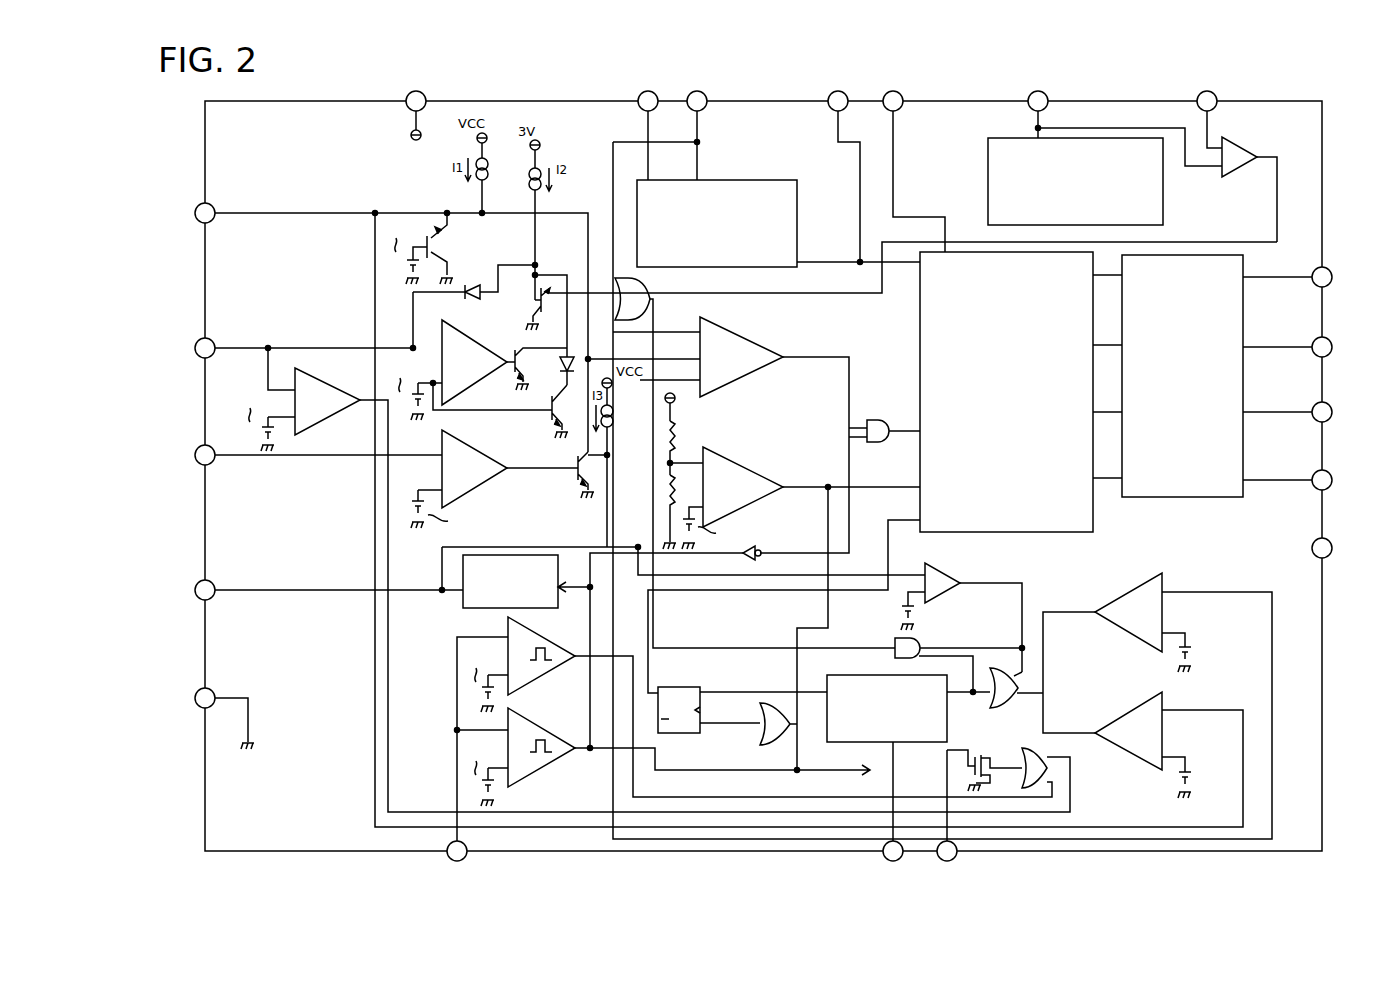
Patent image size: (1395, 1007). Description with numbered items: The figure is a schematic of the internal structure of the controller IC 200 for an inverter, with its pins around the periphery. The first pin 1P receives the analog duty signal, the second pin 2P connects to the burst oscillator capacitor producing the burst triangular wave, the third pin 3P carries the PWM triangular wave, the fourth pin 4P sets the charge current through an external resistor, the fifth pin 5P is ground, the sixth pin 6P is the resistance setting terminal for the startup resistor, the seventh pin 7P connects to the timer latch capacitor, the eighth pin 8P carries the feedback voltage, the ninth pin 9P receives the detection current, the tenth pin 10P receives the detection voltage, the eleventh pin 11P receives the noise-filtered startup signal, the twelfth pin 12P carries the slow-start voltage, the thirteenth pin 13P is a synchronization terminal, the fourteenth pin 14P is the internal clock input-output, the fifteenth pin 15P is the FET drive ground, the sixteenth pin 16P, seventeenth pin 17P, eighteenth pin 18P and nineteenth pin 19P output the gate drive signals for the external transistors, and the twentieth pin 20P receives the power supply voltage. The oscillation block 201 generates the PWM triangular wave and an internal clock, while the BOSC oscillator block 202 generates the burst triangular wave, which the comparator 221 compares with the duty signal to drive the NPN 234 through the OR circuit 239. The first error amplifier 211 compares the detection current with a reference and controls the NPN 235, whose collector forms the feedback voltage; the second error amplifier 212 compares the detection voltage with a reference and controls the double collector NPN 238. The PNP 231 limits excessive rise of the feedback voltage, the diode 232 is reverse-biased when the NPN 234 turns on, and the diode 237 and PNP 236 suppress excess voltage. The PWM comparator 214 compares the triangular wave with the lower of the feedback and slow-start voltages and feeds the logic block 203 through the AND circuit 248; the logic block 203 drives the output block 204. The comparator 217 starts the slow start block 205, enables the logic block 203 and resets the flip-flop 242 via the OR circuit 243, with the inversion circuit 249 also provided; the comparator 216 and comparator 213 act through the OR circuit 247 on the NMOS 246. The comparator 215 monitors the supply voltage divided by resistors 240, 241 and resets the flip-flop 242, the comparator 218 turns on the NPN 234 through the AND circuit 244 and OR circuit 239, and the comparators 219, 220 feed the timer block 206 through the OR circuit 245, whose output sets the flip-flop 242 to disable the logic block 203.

The controller IC 200 is at (288, 101).
The oscillation block 201 is at (738, 178).
The BOSC oscillator block 202 is at (1163, 203).
The logic block 203 is at (1040, 536).
The output block 204 is at (1184, 498).
The slow start block 205 is at (463, 608).
The timer block 206 is at (867, 747).
The first error amplifier 211 is at (458, 330).
The second error amplifier 212 is at (460, 443).
The comparator 213 is at (328, 378).
The PWM comparator 214 is at (744, 330).
The comparator 215 is at (747, 462).
The comparator 216 is at (560, 680).
The comparator 217 is at (562, 772).
The comparator 218 is at (950, 572).
The comparator 219 is at (1130, 581).
The comparator 220 is at (1118, 709).
The comparator 221 is at (1246, 166).
The PNP transistor 231 is at (428, 248).
The diode 232 is at (474, 282).
The NPN transistor 234 is at (580, 311).
The NPN transistor 235 is at (527, 370).
The PNP transistor 236 is at (546, 413).
The diode 237 is at (590, 360).
The double collector type NPN transistor 238 is at (558, 475).
The OR circuit 239 is at (651, 302).
The resistor 240 is at (686, 432).
The resistor 241 is at (685, 505).
The flip-flop circuit 242 is at (688, 686).
The OR circuit 243 is at (765, 744).
The AND circuit 244 is at (897, 640).
The OR circuit 245 is at (998, 669).
The NMOS transistor 246 is at (972, 752).
The OR circuit 247 is at (1024, 750).
The AND circuit 248 is at (872, 417).
The inversion circuit 249 is at (762, 560).
The first pin 1P is at (1227, 107).
The second pin 2P is at (1125, 116).
The third pin 3P is at (668, 123).
The fourth pin 4P is at (654, 123).
The fifth pin 5P is at (212, 712).
The sixth pin 6P is at (961, 821).
The seventh pin 7P is at (879, 817).
The eighth pin 8P is at (380, 318).
The ninth pin 9P is at (293, 341).
The tenth pin 10P is at (303, 462).
The eleventh pin 11P is at (475, 765).
The twelfth pin 12P is at (312, 580).
The thirteenth pin 13P is at (912, 159).
The fourteenth pin 14P is at (844, 166).
The fifteenth pin 15P is at (1323, 543).
The sixteenth pin 16P is at (1305, 407).
The seventeenth pin 17P is at (1305, 475).
The eighteenth pin 18P is at (1305, 342).
The nineteenth pin 19P is at (1305, 272).
The twentieth pin 20P is at (427, 103).